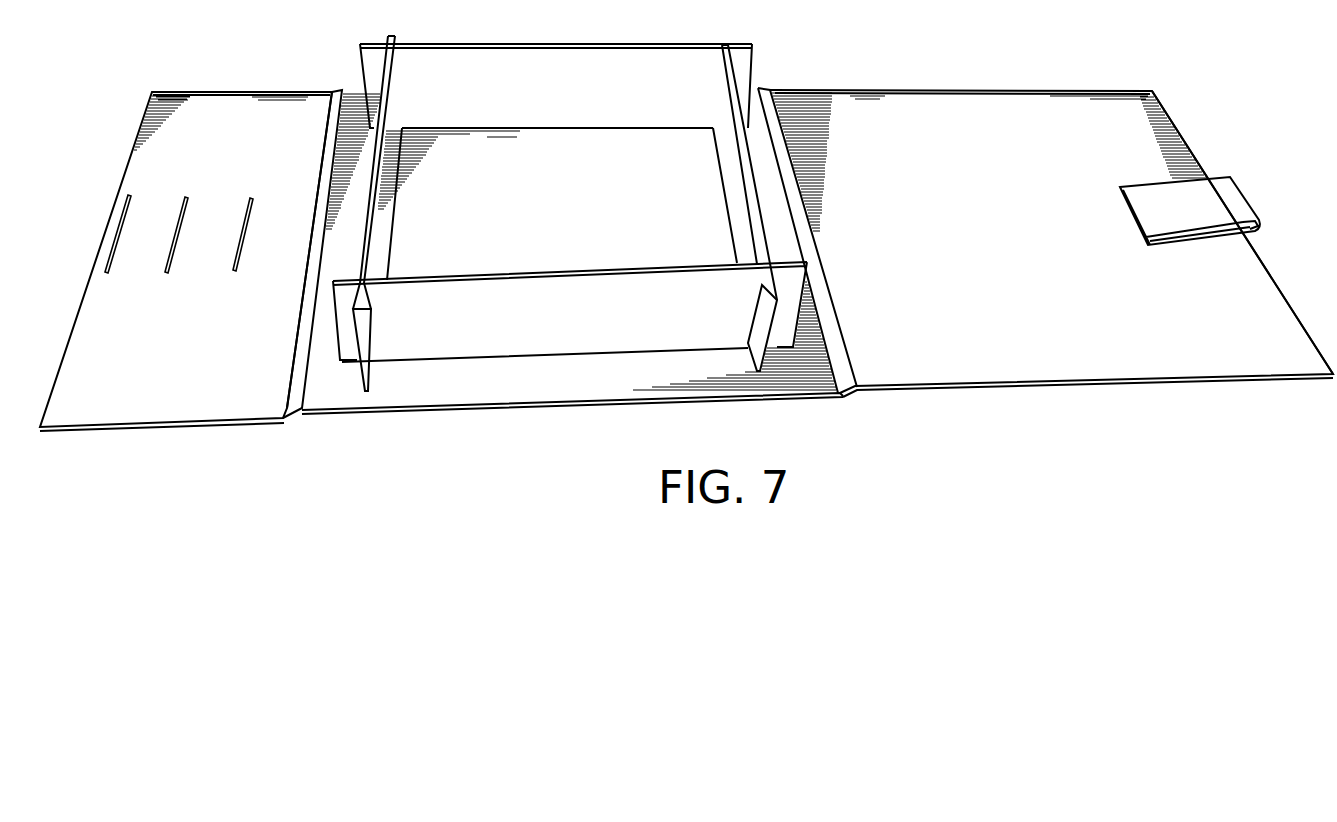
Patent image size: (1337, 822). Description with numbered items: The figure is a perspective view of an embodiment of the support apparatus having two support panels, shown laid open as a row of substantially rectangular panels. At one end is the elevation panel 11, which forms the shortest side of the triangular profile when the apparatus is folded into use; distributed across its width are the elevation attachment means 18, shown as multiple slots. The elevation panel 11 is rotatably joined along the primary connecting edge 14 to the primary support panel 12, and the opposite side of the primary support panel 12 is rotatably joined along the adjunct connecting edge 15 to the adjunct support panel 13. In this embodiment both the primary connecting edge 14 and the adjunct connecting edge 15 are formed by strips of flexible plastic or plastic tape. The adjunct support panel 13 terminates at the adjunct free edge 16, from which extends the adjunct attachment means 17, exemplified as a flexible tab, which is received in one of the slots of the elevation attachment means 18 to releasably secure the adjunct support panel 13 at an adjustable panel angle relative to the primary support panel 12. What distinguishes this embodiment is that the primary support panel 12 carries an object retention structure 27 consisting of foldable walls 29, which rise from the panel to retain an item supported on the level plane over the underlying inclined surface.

The elevation panel 11 is at (228, 384).
The primary support panel 12 is at (554, 390).
The adjunct support panel 13 is at (1057, 347).
The primary connecting edge 14 is at (307, 398).
The adjunct connecting edge 15 is at (785, 180).
The adjunct free edge 16 is at (1275, 283).
The adjunct attachment means 17 is at (1176, 210).
The elevation attachment means 18 is at (105, 272).
The object retention structure 27 is at (748, 135).
The foldable walls 29 is at (770, 242).